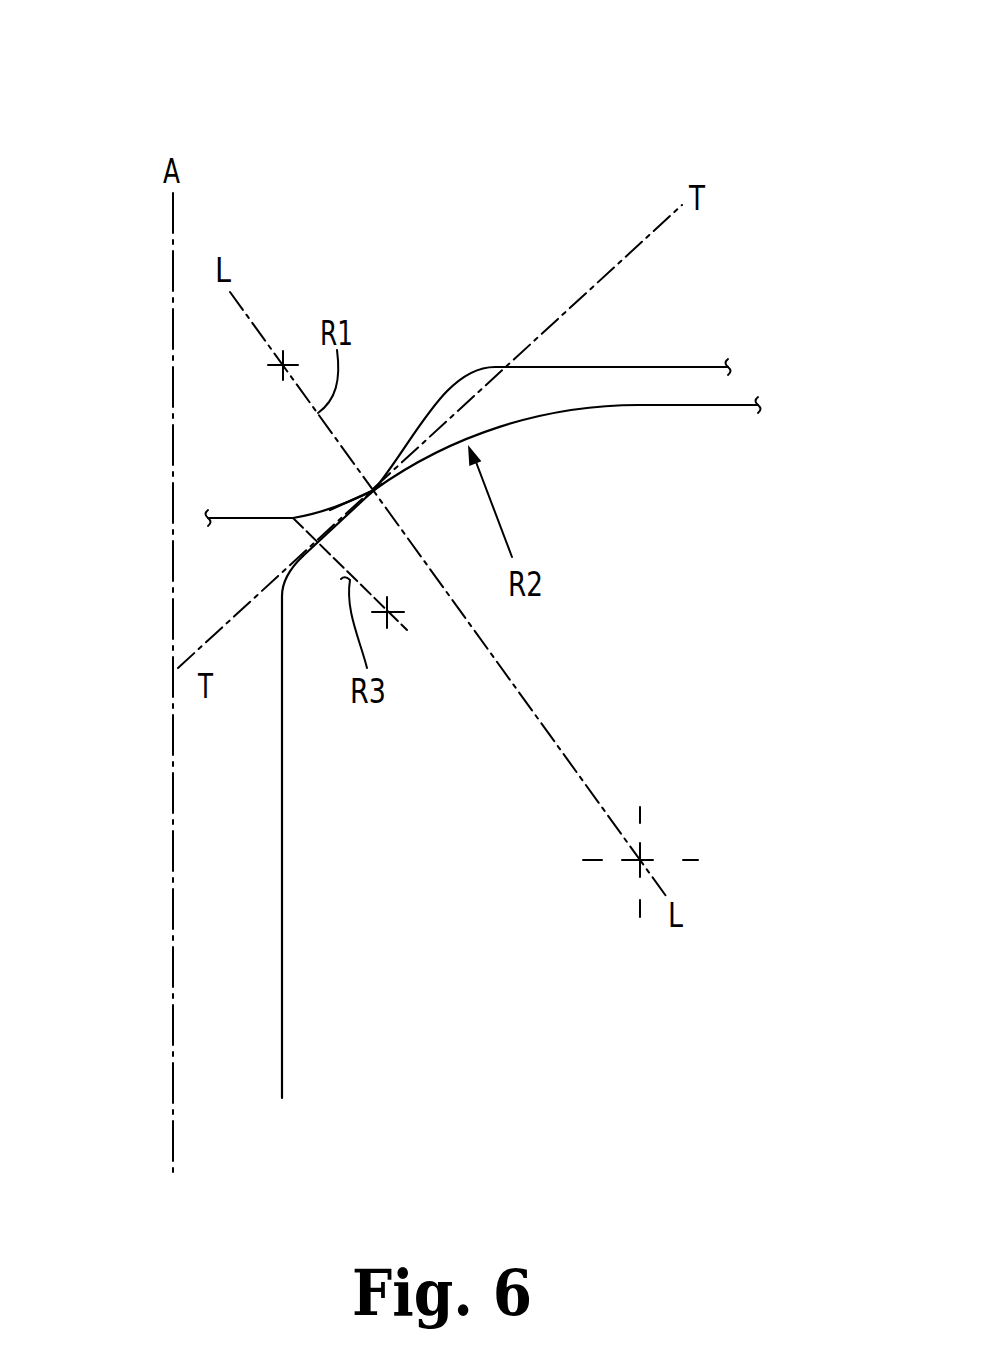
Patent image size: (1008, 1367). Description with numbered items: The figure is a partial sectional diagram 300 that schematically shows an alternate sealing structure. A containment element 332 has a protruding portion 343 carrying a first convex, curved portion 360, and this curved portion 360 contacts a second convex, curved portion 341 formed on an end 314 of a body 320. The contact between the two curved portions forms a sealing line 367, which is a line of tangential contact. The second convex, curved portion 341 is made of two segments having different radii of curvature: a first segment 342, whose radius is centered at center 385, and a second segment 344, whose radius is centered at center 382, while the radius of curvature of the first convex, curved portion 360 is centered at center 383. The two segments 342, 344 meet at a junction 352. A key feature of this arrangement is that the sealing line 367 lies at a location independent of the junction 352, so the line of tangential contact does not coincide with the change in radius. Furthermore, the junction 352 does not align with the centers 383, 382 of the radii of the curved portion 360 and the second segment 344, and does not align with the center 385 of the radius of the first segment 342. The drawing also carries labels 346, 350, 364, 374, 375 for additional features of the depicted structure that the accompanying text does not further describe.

The diagram 300 is at (433, 118).
The end of body 314 is at (650, 408).
The body 320 is at (767, 565).
The containment element 332 is at (710, 315).
The second convex, curved portion 341 is at (523, 440).
The first segment 342 is at (303, 593).
The protruding portion 343 is at (515, 315).
The second segment 344 is at (364, 522).
The first fillet surface 346 is at (389, 310).
The web region 350 is at (250, 763).
The junction 352 is at (285, 542).
The first convex, curved portion 360 is at (328, 515).
The junction point 364 is at (400, 495).
The sealing line 367 is at (375, 477).
The web surface 374 is at (283, 930).
The rim surface reference line 375 is at (735, 402).
The center of radius of curvature of second segment 382 is at (640, 860).
The center of radius of curvature of first curved portion 383 is at (283, 365).
The center of radius of curvature of first segment 385 is at (409, 632).